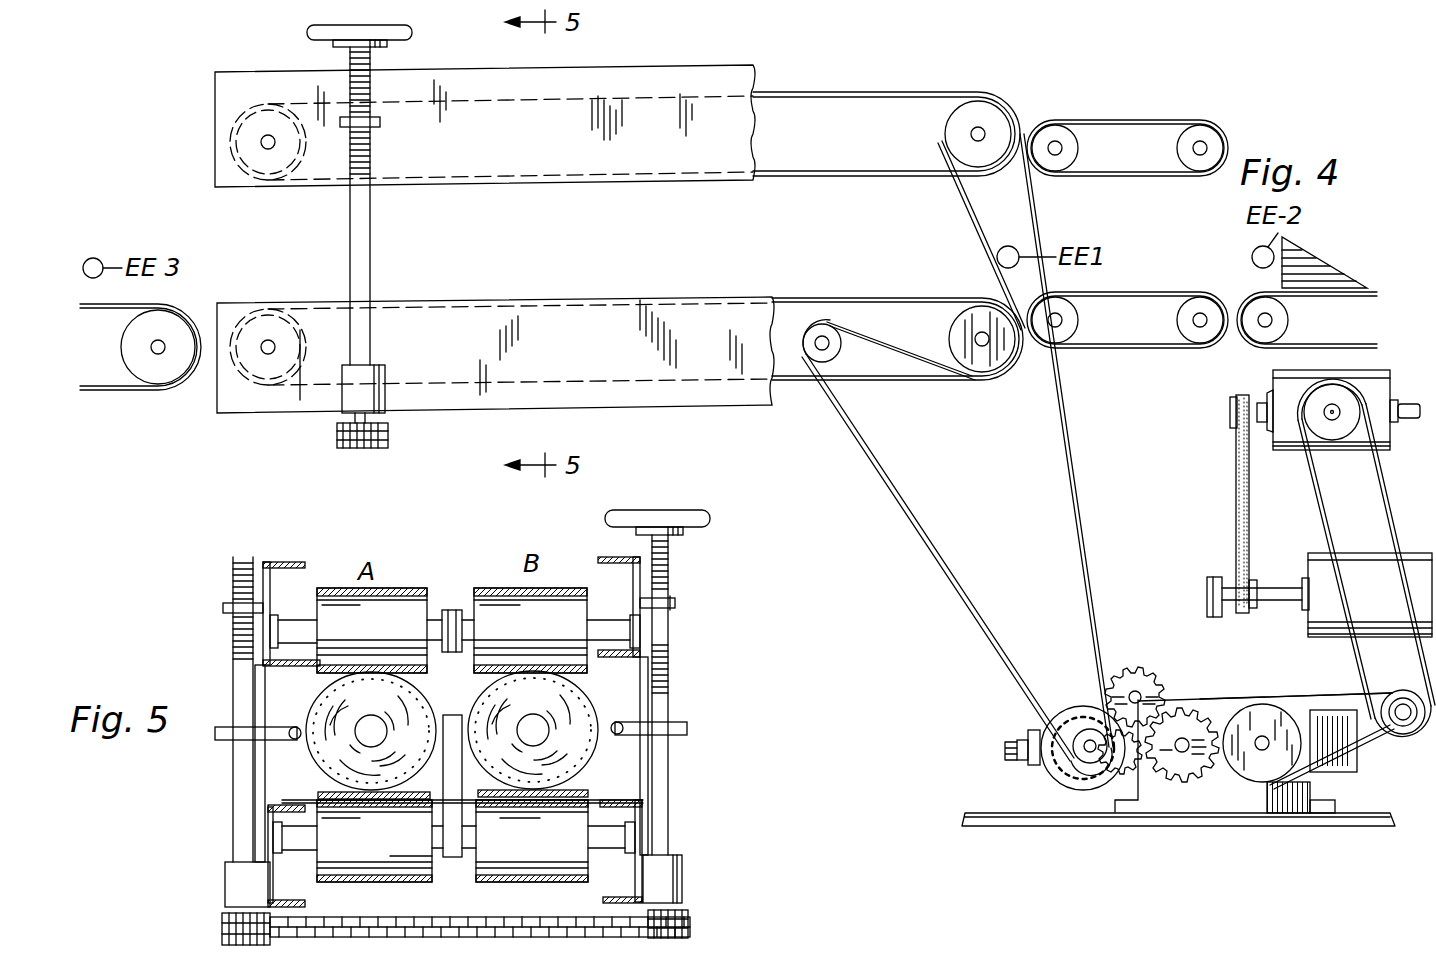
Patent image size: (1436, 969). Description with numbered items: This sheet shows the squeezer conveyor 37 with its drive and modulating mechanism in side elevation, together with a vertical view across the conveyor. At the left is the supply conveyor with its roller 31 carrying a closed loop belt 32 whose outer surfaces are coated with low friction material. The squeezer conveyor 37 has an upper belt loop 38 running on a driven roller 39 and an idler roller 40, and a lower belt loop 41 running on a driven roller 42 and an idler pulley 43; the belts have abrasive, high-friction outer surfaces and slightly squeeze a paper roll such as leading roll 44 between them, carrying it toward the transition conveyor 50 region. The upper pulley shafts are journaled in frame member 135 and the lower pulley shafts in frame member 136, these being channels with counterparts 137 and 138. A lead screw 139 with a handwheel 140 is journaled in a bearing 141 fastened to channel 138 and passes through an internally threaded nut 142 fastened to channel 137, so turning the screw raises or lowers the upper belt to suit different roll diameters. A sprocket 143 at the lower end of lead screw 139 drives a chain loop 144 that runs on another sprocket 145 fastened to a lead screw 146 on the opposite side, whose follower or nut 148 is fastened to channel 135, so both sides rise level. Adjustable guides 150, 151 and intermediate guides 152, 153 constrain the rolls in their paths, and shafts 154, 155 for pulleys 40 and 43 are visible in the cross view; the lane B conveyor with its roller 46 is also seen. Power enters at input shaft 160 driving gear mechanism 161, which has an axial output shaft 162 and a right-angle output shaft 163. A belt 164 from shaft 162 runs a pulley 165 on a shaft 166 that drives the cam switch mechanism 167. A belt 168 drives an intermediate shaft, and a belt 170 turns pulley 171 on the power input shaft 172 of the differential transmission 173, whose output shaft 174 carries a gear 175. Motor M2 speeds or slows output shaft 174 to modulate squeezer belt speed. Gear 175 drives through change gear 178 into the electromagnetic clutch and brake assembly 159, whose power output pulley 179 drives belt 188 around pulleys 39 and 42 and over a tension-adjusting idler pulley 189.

In FIG. 4, the roller 31 is at (128, 355).
In FIG. 4, the closed loop belt 32 is at (126, 392).
In FIG. 4, the squeezer conveyor 37 is at (556, 262).
In FIG. 4, the upper belt loop 38 is at (892, 176).
In FIG. 5, the upper belt loop 38 is at (329, 586).
In FIG. 4, the driven roller 39 is at (955, 131).
In FIG. 4, the idler roller 40 is at (266, 170).
In FIG. 5, the idler roller 40 is at (385, 616).
In FIG. 4, the lower belt loop 41 is at (893, 296).
In FIG. 5, the lower belt loop 41 is at (326, 795).
In FIG. 4, the driven roller 42 is at (988, 382).
In FIG. 4, the idler pulley 43 is at (262, 402).
In FIG. 5, the idler pulley 43 is at (416, 856).
In FIG. 5, the leading roll 44 is at (332, 693).
In FIG. 5, the roller 46 is at (490, 586).
In FIG. 4, the conveyor station 50 is at (1186, 239).
In FIG. 4, the frame member 135 is at (690, 143).
In FIG. 5, the frame member 135 is at (263, 581).
In FIG. 4, the frame member 136 is at (646, 305).
In FIG. 5, the frame member 136 is at (266, 836).
In FIG. 5, the channel 137 is at (642, 582).
In FIG. 5, the channel 138 is at (644, 826).
In FIG. 4, the lead screw 139 is at (372, 227).
In FIG. 5, the lead screw 139 is at (670, 678).
In FIG. 4, the handwheel 140 is at (305, 37).
In FIG. 5, the handwheel 140 is at (688, 522).
In FIG. 4, the bearing 141 is at (388, 375).
In FIG. 5, the bearing 141 is at (684, 862).
In FIG. 5, the internally threaded nut 142 is at (678, 603).
In FIG. 4, the sprocket 143 is at (390, 428).
In FIG. 5, the sprocket 143 is at (690, 915).
In FIG. 5, the chain loop 144 is at (512, 905).
In FIG. 5, the sprocket 145 is at (240, 915).
In FIG. 5, the lead screw 146 is at (250, 683).
In FIG. 5, the follower or nut 148 is at (226, 608).
In FIG. 5, the adjustable guide 150 is at (292, 740).
In FIG. 5, the adjustable guide 151 is at (628, 726).
In FIG. 5, the intermediate guide 152 is at (452, 610).
In FIG. 5, the intermediate guide 153 is at (458, 715).
In FIG. 5, the shaft 154 is at (642, 635).
In FIG. 5, the shaft 155 is at (620, 834).
In FIG. 4, the electromagnetic clutch and brake assembly 159 is at (1052, 793).
In FIG. 4, the power input shaft 160 is at (1406, 400).
In FIG. 4, the gear mechanism 161 is at (1283, 374).
In FIG. 4, the axial output shaft 162 is at (1228, 412).
In FIG. 4, the right-angle output shaft 163 is at (1328, 416).
In FIG. 4, the belt 164 is at (1236, 470).
In FIG. 4, the pulley 165 is at (1258, 582).
In FIG. 4, the shaft 166 is at (1287, 598).
In FIG. 4, the cam switch mechanism 167 is at (1418, 553).
In FIG. 4, the belt 168 is at (1326, 515).
In FIG. 4, the belt 170 is at (1335, 766).
In FIG. 4, the pulley 171 is at (1132, 776).
In FIG. 4, the power input shaft 172 is at (1262, 738).
In FIG. 4, the differential transmission 173 is at (1276, 808).
In FIG. 4, the output shaft 174 is at (1188, 752).
In FIG. 4, the gear 175 is at (1190, 792).
In FIG. 4, the change gear 178 is at (1144, 668).
In FIG. 4, the power output pulley 179 is at (1080, 720).
In FIG. 4, the belt 188 is at (924, 528).
In FIG. 4, the idler pulley 189 is at (842, 345).
In FIG. 4, the motor M2 is at (1358, 772).